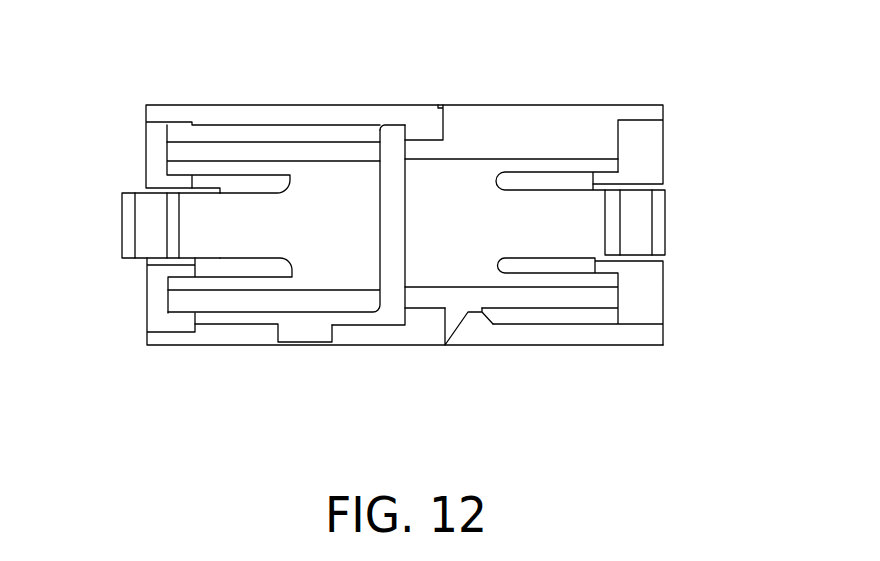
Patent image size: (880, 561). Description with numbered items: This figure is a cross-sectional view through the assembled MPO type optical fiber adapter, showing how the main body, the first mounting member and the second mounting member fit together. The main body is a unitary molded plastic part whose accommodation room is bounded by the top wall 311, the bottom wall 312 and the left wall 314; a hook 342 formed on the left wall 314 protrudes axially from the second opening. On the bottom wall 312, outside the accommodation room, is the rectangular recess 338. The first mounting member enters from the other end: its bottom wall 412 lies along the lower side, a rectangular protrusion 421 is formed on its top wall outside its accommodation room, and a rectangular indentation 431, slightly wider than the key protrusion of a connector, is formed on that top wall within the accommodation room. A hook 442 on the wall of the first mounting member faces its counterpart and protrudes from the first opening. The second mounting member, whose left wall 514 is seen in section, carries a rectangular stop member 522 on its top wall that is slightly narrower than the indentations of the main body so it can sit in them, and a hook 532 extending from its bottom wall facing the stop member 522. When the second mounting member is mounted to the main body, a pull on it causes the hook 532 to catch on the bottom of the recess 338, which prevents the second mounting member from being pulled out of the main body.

The top wall 311 is at (311, 112).
The bottom wall 312 is at (245, 333).
The left wall 314 is at (155, 298).
The rectangular recess 338 is at (570, 297).
The hook 342 is at (658, 222).
The bottom wall 412 is at (317, 298).
The rectangular protrusion 421 is at (258, 132).
The rectangular indentation 431 is at (212, 147).
The hook 442 is at (127, 223).
The left wall 514 is at (543, 180).
The rectangular stop member 522 is at (423, 145).
The hook 532 is at (473, 318).